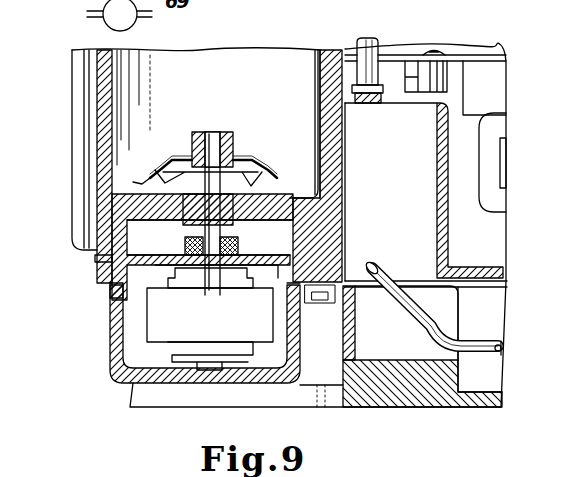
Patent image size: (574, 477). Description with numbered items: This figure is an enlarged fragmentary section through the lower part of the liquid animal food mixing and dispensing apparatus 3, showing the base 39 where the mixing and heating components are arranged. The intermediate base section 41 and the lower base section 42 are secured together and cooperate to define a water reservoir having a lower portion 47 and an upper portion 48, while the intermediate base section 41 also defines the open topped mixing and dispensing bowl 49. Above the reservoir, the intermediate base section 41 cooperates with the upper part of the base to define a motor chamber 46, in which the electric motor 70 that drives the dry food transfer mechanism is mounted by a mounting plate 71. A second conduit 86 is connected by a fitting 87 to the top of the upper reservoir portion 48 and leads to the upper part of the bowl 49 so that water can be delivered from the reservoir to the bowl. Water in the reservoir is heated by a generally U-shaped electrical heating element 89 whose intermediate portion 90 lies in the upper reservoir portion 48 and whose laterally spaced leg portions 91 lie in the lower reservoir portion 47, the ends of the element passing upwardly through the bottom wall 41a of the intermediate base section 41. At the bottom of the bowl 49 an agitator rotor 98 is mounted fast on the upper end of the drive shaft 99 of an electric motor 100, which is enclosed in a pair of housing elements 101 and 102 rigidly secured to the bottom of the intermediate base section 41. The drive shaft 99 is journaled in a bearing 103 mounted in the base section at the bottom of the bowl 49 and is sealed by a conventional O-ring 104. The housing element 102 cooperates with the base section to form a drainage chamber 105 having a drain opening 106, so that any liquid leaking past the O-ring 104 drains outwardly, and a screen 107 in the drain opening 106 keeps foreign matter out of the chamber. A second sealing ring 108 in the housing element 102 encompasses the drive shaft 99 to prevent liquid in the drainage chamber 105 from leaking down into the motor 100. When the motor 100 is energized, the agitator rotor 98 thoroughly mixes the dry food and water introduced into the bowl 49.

The liquid animal food mixing and dispensing apparatus 3 is at (508, 93).
The base 39 is at (506, 406).
The intermediate base section 41 is at (508, 268).
The bottom wall of the intermediate base section 41a is at (508, 284).
The lower base section 42 is at (428, 405).
The motor chamber 46 is at (508, 240).
The lower reservoir portion 47 is at (496, 310).
The upper reservoir portion 48 is at (407, 187).
The mixing and dispensing bowl 49 is at (215, 82).
The electric motor 70 is at (506, 160).
The mounting plate 71 is at (487, 58).
The second conduit 86 is at (369, 38).
The fitting 87 is at (368, 108).
The electrical heating element 89 is at (504, 352).
The intermediate portion of the heating element 90 is at (373, 262).
The leg portions of the heating element 91 is at (492, 340).
The agitator rotor 98 is at (245, 164).
The drive shaft 99 is at (214, 132).
The electric motor 100 is at (232, 325).
The housing element 101 is at (112, 365).
The housing element 102 is at (158, 288).
The bearing 103 is at (258, 197).
The O-ring 104 is at (183, 206).
The drainage chamber 105 is at (160, 195).
The drain opening 106 is at (95, 278).
The screen 107 is at (97, 259).
The second sealing ring 108 is at (186, 243).